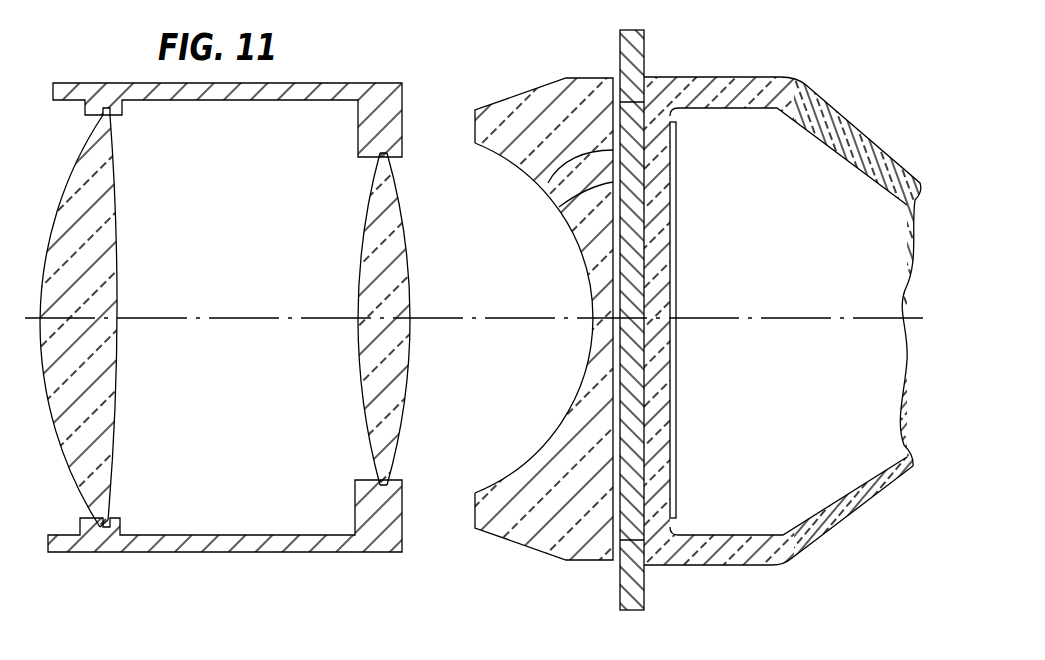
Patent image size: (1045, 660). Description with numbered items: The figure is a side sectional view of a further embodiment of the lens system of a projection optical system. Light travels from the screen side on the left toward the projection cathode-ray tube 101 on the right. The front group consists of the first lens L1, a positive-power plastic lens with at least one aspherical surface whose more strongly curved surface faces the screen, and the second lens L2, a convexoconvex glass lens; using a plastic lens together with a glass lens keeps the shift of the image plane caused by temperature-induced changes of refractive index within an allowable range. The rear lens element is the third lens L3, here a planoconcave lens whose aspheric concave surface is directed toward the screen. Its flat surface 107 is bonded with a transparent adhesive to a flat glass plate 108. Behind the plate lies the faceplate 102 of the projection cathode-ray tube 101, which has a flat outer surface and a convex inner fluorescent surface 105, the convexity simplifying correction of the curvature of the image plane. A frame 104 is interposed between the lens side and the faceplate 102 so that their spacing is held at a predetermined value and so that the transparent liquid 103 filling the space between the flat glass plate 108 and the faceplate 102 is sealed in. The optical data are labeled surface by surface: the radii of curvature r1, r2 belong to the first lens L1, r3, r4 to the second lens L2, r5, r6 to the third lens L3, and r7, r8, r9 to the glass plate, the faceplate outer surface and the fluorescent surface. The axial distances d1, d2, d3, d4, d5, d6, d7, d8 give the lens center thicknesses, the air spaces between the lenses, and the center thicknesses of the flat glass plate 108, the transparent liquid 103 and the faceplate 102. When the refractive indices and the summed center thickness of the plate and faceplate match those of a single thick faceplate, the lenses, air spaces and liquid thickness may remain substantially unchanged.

The projection cathode-ray tube 101 is at (802, 92).
The faceplate 102 is at (665, 437).
The transparent liquid 103 is at (623, 420).
The frame 104 is at (648, 62).
The fluorescent surface 105 is at (674, 382).
The flat surface 107 is at (613, 120).
The flat glass plate 108 is at (620, 77).
The first lens L1 is at (117, 208).
The second lens L2 is at (368, 200).
The third lens L3 is at (513, 98).
The radius of curvature of the first surface r1 is at (53, 203).
The radius of curvature of the second surface r2 is at (118, 255).
The radius of curvature of the third surface r3 is at (362, 244).
The radius of curvature of the fourth surface r4 is at (408, 247).
The radius of curvature of the fifth surface r5 is at (514, 163).
The radius of curvature of the sixth surface r6 is at (573, 162).
The radius of curvature of the seventh surface r7 is at (573, 194).
The radius of curvature of the eighth surface r8 is at (650, 220).
The radius of curvature of the ninth surface r9 is at (665, 252).
The first axial distance d1 is at (94, 306).
The second axial distance d2 is at (248, 306).
The third axial distance d3 is at (386, 306).
The fourth axial distance d4 is at (506, 306).
The fifth axial distance d5 is at (600, 317).
The sixth axial distance d6 is at (612, 323).
The seventh axial distance d7 is at (637, 322).
The eighth axial distance d8 is at (663, 306).